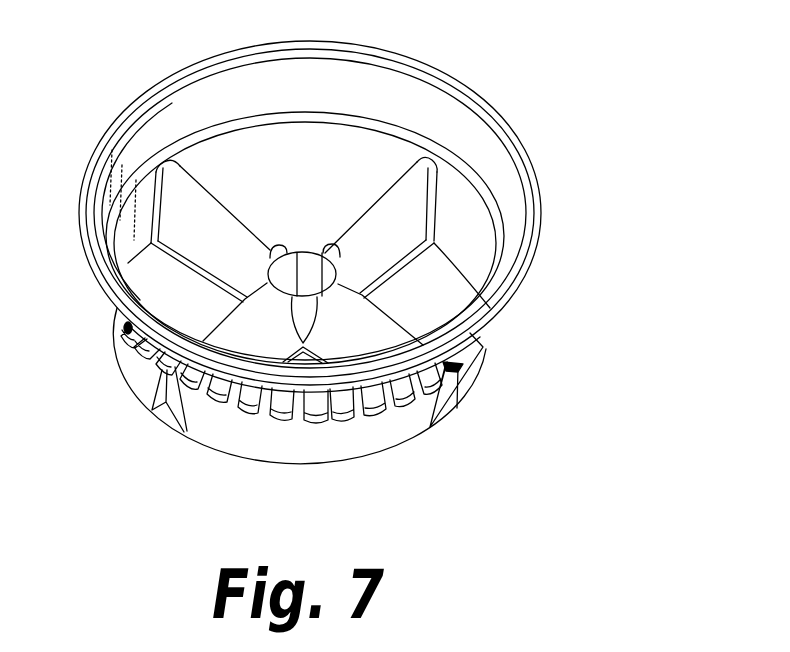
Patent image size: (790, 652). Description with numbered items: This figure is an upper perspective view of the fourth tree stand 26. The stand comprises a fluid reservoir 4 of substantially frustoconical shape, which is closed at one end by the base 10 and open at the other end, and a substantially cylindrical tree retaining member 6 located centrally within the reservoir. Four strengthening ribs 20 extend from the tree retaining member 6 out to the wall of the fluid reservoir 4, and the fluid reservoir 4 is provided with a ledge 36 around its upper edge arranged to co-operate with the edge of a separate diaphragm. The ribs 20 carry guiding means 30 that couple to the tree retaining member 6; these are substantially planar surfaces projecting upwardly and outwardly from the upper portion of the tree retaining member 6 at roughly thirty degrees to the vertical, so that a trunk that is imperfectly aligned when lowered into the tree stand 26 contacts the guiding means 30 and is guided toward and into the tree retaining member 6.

The fourth tree stand 26 is at (113, 84).
The fluid reservoir 4 is at (222, 82).
The ledge 36 is at (397, 138).
The strengthening ribs 20 is at (217, 222).
The tree retaining member 6 is at (310, 252).
The guiding means 30 is at (273, 250).
The base 10 is at (386, 462).